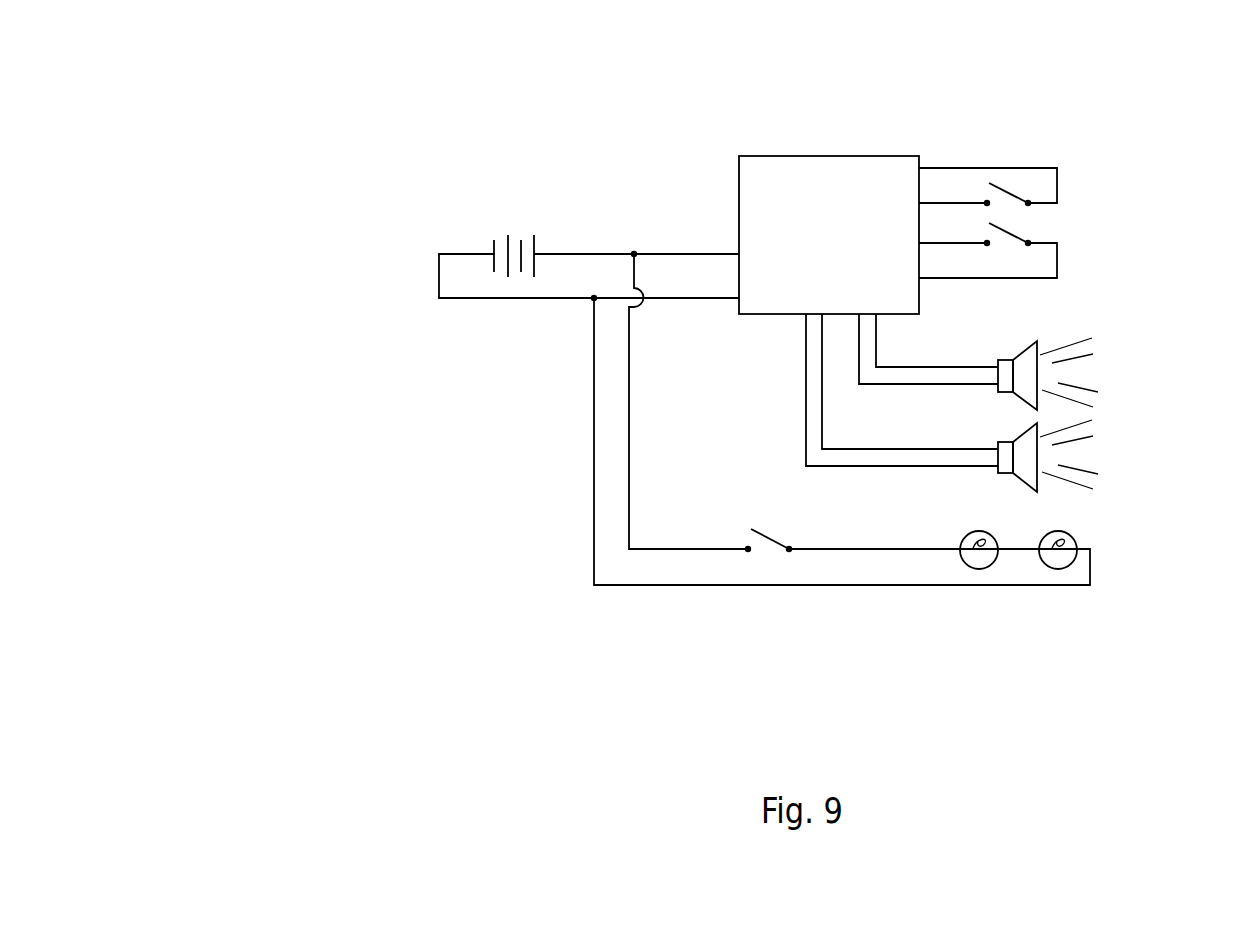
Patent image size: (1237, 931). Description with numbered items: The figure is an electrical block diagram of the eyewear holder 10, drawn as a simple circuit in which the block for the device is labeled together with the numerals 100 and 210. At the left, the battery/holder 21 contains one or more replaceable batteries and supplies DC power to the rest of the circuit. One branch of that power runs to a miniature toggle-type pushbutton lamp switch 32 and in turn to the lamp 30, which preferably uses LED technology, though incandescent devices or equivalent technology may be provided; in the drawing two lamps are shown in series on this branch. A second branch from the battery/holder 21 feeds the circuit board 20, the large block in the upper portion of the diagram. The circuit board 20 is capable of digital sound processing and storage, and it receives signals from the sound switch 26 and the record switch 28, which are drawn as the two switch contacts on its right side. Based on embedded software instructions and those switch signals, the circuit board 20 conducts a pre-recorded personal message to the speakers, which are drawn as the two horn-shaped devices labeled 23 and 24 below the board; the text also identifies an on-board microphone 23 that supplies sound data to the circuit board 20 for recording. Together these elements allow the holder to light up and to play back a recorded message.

The eyewear holder 10 is at (722, 405).
The training device / system 100 is at (722, 405).
The training device / system 210 is at (427, 693).
The circuit board 20 is at (820, 182).
The battery/holder 21 is at (528, 240).
The on-board microphone 23 is at (1042, 372).
The second speaker 24 is at (1042, 458).
The sound switch 26 is at (1028, 189).
The record switch 28 is at (1022, 231).
The lamp 30 is at (1055, 570).
The lamp switch 32 is at (765, 547).